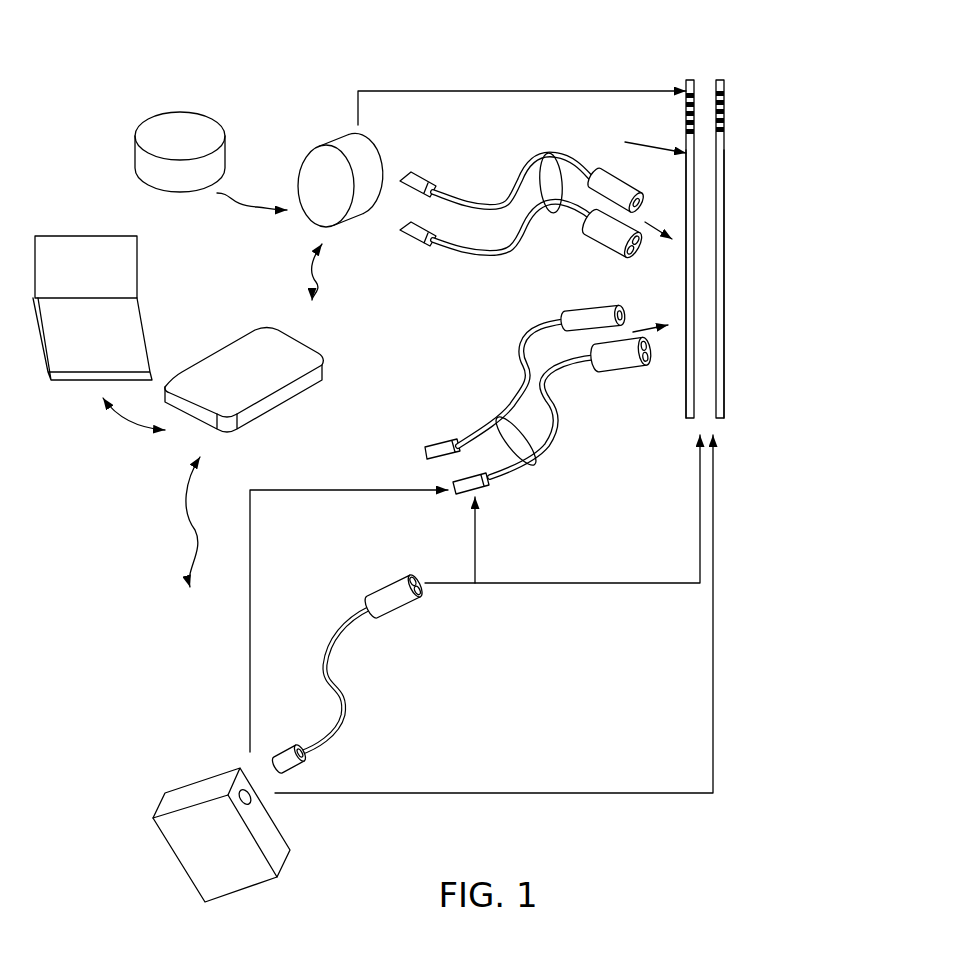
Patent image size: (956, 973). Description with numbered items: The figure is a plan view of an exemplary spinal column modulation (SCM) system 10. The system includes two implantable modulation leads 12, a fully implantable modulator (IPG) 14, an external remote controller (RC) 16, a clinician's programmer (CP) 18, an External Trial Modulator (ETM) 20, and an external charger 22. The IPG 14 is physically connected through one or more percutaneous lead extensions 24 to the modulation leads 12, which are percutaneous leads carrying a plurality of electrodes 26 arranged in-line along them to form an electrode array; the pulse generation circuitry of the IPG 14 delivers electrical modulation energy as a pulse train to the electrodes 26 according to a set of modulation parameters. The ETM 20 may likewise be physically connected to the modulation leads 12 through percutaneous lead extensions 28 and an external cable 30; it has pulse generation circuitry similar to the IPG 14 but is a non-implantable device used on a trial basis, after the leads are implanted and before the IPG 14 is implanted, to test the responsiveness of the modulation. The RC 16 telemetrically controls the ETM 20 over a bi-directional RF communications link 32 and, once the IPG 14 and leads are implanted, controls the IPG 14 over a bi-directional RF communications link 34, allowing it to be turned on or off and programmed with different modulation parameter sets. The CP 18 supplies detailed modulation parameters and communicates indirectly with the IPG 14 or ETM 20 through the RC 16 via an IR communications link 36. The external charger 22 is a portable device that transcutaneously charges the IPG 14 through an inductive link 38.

The spinal column modulation (SCM) system 10 is at (497, 48).
The implantable modulation leads 12 is at (682, 226).
The implantable modulator (IPG) 14 is at (323, 142).
The external remote controller (RC) 16 is at (256, 342).
The clinician's programmer (CP) 18 is at (72, 250).
The External Trial Modulator (ETM) 20 is at (197, 792).
The external charger 22 is at (180, 120).
The percutaneous lead extension 24 is at (548, 157).
The electrodes 26 is at (725, 143).
The percutaneous lead extension 28 is at (497, 420).
The external cable 30 is at (343, 622).
The bi-directional RF communications link 32 is at (193, 560).
The bi-directional RF communications link 34 is at (325, 289).
The IR communications link 36 is at (128, 428).
The inductive link 38 is at (223, 212).